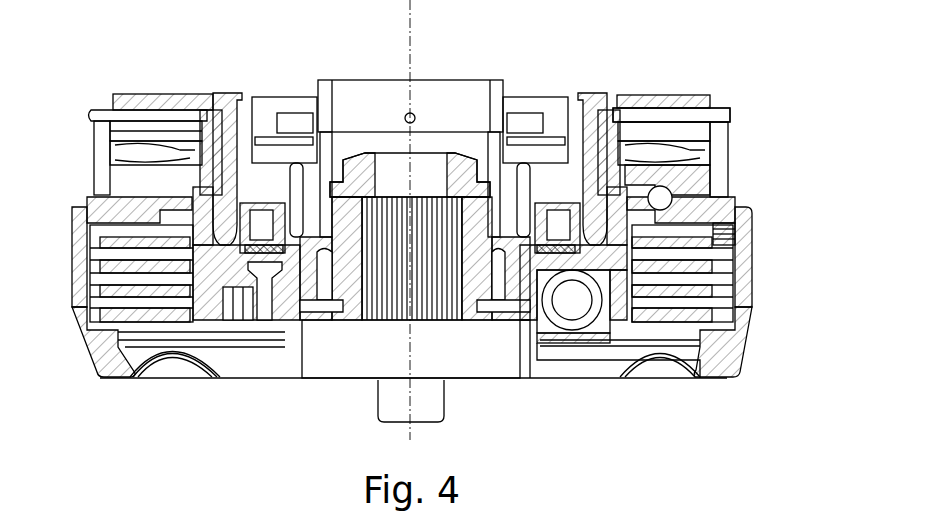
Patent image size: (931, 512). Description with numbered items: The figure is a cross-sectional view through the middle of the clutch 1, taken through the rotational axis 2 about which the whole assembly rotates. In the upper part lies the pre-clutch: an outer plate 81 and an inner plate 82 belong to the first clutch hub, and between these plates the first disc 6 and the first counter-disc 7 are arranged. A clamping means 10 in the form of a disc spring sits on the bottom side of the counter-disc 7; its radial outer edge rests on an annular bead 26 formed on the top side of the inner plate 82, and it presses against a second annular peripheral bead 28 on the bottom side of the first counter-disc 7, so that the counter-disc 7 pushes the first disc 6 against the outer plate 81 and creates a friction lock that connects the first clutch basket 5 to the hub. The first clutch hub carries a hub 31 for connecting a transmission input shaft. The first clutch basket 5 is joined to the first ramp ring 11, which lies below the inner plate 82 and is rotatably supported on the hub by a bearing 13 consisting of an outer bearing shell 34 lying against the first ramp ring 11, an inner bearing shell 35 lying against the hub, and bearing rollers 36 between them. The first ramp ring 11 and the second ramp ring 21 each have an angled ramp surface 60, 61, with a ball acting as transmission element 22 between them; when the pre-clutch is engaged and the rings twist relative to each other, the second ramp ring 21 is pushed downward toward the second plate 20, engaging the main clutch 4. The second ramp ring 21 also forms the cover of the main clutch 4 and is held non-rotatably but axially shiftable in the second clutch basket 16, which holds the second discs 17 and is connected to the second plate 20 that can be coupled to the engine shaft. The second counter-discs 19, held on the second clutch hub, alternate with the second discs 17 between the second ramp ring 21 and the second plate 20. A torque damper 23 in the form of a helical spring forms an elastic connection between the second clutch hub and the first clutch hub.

The clutch 1 is at (766, 62).
The rotational axis 2 is at (410, 80).
The main clutch 4 is at (755, 318).
The first clutch basket 5 is at (95, 118).
The first disc 6 is at (113, 96).
The first counter-disc 7 is at (125, 125).
The clamping means 10 is at (150, 145).
The first ramp ring 11 is at (688, 96).
The bearing 13 is at (330, 185).
The second clutch basket 16 is at (97, 232).
The second discs 17 is at (100, 315).
The second counter-discs 19 is at (125, 347).
The second plate 20 is at (172, 352).
The second ramp ring 21 is at (740, 232).
The transmission element 22 is at (730, 168).
The torque damper 23 is at (572, 343).
The annular bead 26 is at (102, 160).
The second annular peripheral bead 28 is at (225, 100).
The hub 31 is at (776, 120).
The outer bearing shell 34 is at (615, 120).
The inner bearing shell 35 is at (585, 100).
The bearing rollers 36 is at (590, 100).
The ramp surface 60 is at (700, 150).
The ramp surface 61 is at (672, 192).
The outer plate 81 is at (258, 100).
The inner plate 82 is at (110, 200).